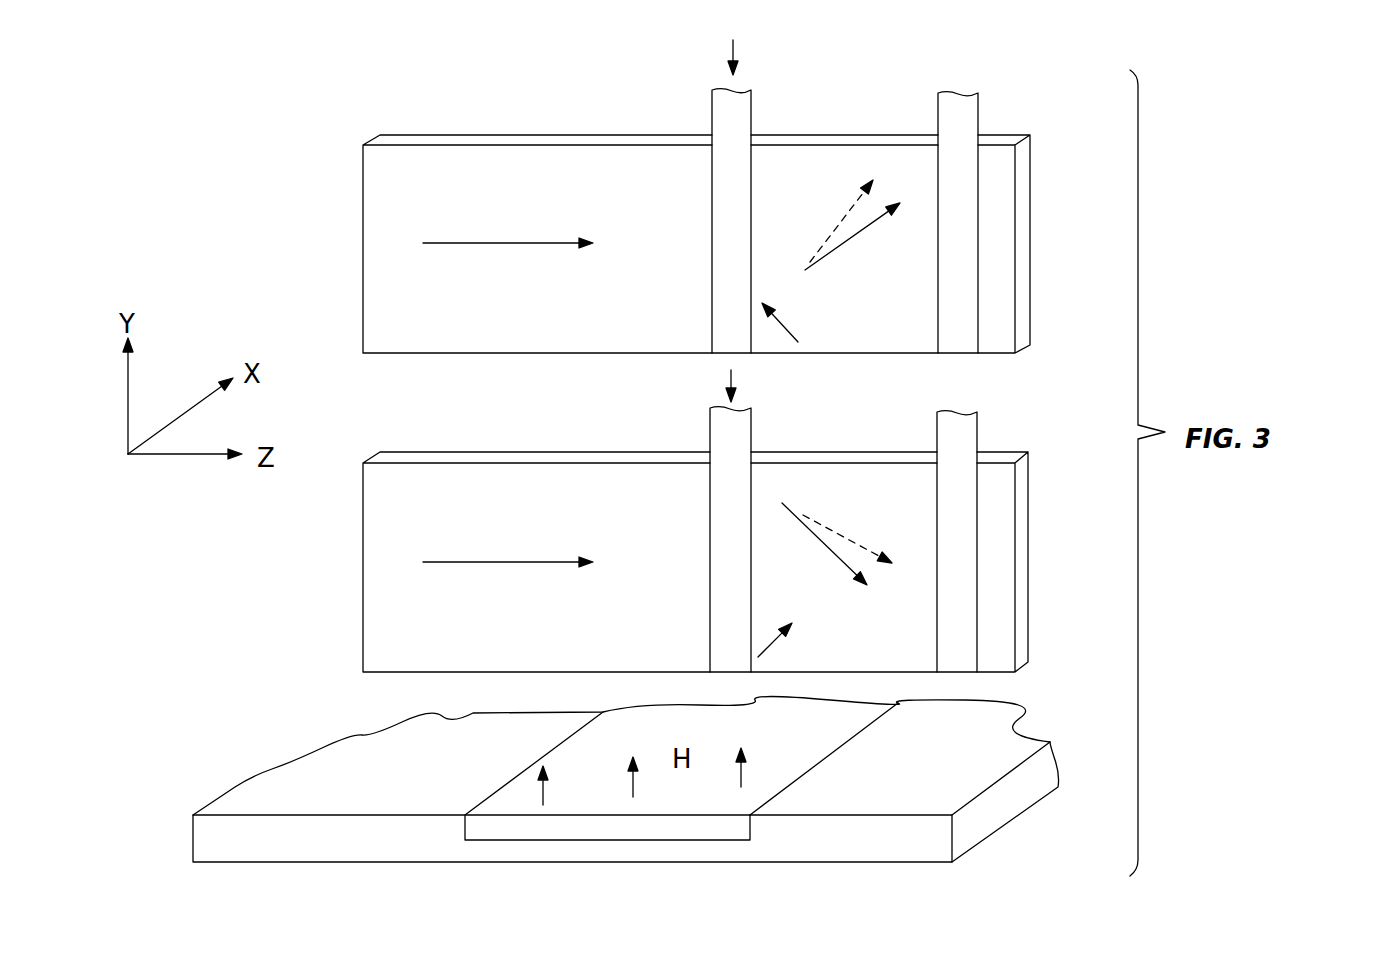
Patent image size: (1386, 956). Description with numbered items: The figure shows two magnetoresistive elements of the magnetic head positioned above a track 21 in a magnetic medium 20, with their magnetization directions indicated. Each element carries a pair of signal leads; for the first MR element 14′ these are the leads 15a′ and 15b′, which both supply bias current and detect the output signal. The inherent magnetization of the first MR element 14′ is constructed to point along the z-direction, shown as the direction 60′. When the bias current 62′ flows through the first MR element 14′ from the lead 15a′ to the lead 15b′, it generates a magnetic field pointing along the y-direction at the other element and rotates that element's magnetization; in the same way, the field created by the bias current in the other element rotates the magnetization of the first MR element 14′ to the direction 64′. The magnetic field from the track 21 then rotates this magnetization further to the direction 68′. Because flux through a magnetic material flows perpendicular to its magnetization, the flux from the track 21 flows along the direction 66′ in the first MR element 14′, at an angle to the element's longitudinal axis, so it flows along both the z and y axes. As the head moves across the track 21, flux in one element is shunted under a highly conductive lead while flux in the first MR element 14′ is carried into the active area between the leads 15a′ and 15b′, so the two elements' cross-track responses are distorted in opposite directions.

The first MR element 14′ is at (695, 562).
The signal lead 15a′ is at (722, 438).
The signal lead 15b′ is at (967, 440).
The inherent magnetization direction 60′ is at (508, 548).
The bias current 62′ is at (731, 377).
The rotated magnetization direction 64′ is at (836, 556).
The flux direction 66′ is at (777, 646).
The further rotated magnetization direction 68′ is at (832, 534).
The magnetic medium 20 is at (973, 823).
The track 21 is at (615, 830).